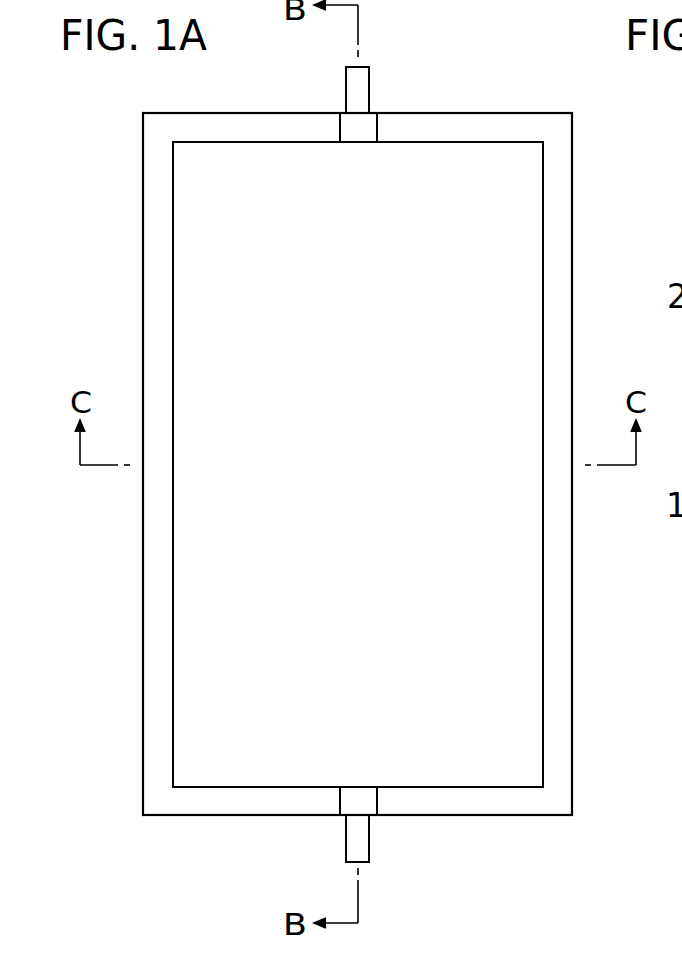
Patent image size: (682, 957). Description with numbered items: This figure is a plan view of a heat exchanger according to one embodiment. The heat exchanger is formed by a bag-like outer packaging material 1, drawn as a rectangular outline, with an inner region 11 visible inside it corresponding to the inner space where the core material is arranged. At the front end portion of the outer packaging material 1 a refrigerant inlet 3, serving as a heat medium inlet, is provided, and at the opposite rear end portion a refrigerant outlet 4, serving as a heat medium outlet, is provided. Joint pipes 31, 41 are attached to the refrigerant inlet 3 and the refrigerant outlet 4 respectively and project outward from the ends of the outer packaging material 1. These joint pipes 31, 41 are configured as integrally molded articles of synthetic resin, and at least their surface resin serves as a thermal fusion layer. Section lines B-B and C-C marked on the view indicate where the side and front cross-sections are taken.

The outer packaging material 1 is at (576, 271).
The electrode body region 11 is at (502, 210).
The refrigerant inlet 3 is at (370, 112).
The joint pipe 31 is at (357, 88).
The refrigerant outlet 4 is at (347, 817).
The joint pipe 41 is at (358, 840).